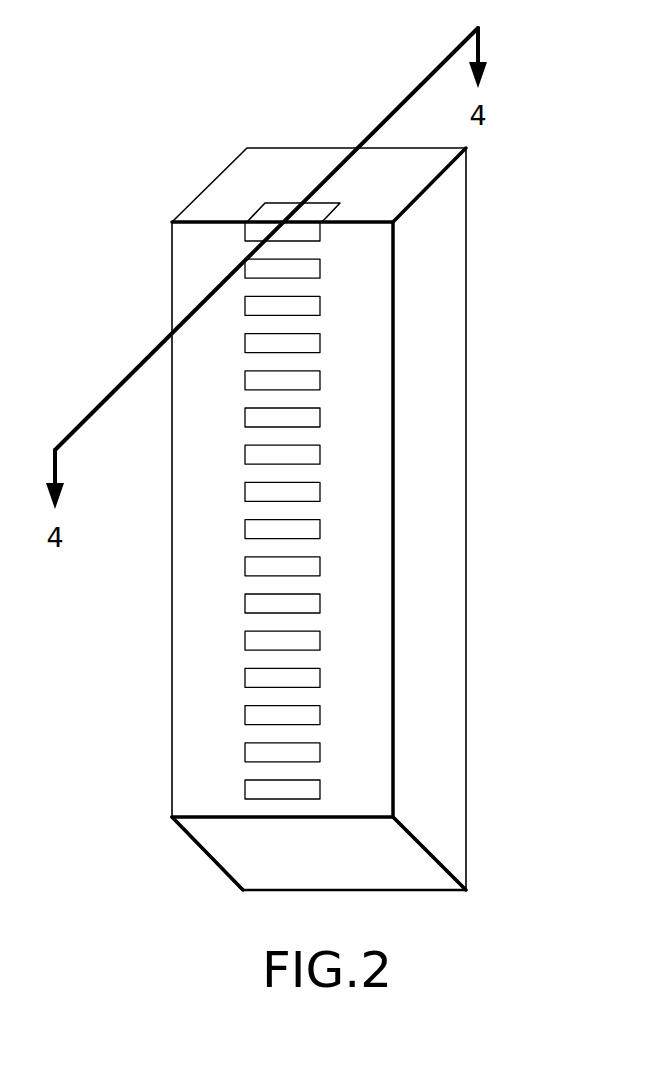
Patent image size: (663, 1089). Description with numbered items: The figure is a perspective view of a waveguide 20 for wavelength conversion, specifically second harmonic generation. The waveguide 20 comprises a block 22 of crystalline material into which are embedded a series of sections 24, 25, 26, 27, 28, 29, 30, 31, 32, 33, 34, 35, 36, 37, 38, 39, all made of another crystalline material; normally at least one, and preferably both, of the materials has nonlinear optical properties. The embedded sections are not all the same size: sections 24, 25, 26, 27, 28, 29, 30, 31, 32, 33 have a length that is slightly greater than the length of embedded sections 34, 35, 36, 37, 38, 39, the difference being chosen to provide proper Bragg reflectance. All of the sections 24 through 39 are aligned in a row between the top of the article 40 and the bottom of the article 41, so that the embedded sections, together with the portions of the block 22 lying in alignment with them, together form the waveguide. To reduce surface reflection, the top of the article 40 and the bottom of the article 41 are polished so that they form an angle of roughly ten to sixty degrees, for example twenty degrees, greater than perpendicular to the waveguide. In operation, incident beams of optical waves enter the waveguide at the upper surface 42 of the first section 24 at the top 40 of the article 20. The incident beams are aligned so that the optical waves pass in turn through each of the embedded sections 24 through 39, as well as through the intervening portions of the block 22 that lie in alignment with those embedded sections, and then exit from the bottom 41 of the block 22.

The waveguide 20 is at (340, 464).
The block 22 is at (472, 177).
The embedded section 24 is at (320, 241).
The embedded section 25 is at (320, 278).
The embedded section 26 is at (320, 353).
The embedded section 27 is at (320, 390).
The embedded section 28 is at (320, 464).
The embedded section 29 is at (320, 539).
The embedded section 30 is at (320, 576).
The embedded section 31 is at (320, 650).
The embedded section 32 is at (320, 725).
The embedded section 33 is at (320, 762).
The embedded section 34 is at (320, 315).
The embedded section 35 is at (320, 427).
The embedded section 36 is at (320, 501).
The embedded section 37 is at (320, 613).
The embedded section 38 is at (320, 687).
The embedded section 39 is at (320, 799).
The top of the article 40 is at (218, 195).
The bottom of the article 41 is at (230, 846).
The upper surface 42 is at (285, 202).